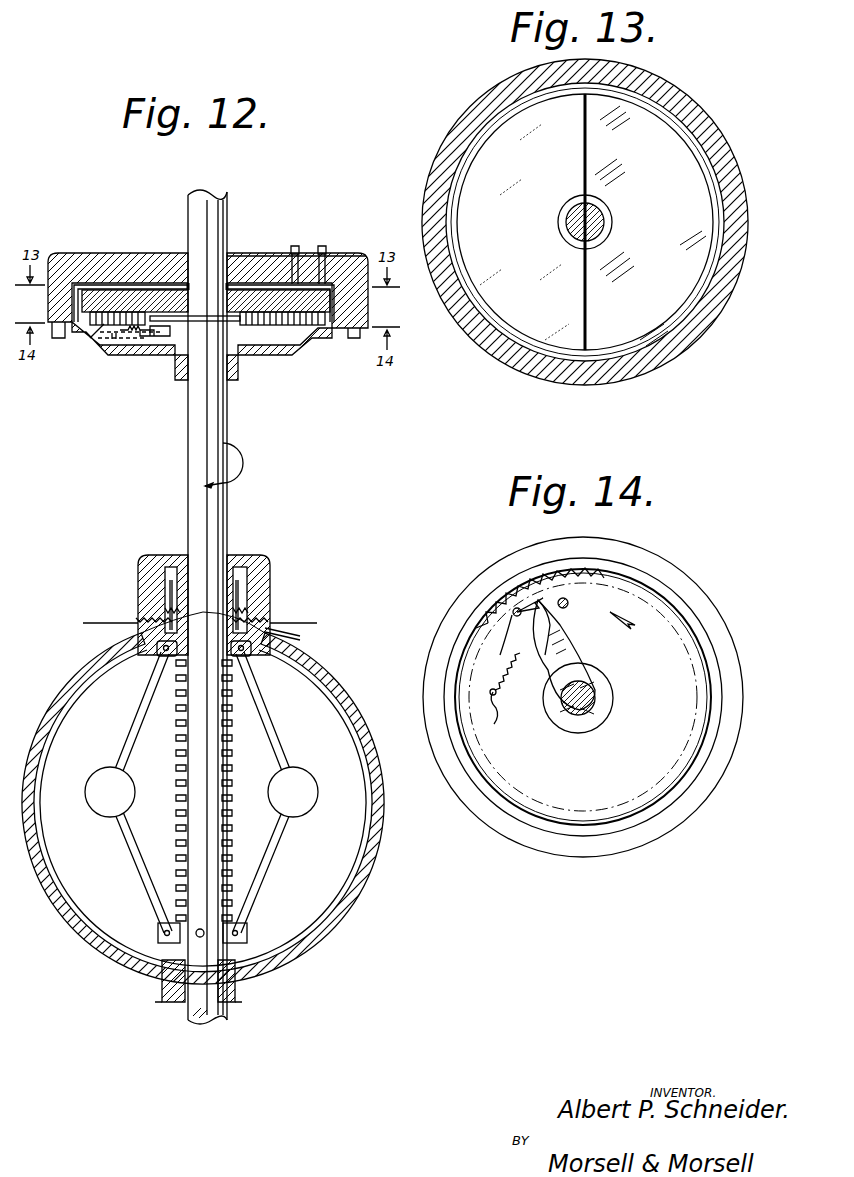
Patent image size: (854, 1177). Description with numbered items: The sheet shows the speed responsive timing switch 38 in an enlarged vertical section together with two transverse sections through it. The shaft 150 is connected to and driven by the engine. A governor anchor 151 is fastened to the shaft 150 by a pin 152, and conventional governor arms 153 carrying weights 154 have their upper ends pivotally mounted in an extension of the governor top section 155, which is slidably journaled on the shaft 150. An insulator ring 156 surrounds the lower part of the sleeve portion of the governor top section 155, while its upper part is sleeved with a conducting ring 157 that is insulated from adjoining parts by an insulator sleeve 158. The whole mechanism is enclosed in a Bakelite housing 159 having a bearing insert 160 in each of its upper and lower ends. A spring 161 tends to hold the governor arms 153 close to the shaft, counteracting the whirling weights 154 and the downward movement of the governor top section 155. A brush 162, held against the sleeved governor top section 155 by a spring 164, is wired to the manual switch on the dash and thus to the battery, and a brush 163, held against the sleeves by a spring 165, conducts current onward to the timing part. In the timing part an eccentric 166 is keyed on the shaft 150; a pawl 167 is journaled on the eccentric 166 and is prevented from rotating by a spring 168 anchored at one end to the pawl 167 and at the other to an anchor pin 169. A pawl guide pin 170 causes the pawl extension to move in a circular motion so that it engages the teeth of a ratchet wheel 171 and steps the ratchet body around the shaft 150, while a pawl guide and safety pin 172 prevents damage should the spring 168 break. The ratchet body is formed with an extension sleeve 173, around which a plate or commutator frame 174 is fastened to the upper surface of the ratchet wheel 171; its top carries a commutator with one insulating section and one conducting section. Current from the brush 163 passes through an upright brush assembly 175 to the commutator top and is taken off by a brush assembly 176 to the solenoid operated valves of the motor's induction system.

In FIG. 12, the speed responsive timing switch 38 is at (273, 356).
In FIG. 12, the shaft 150 is at (206, 222).
In FIG. 13, the shaft 150 is at (600, 228).
In FIG. 14, the shaft 150 is at (596, 700).
In FIG. 12, the governor anchor 151 is at (152, 935).
In FIG. 12, the pin 152 is at (196, 937).
In FIG. 12, the governor arms 153 is at (270, 728).
In FIG. 12, the weights 154 is at (100, 800).
In FIG. 12, the governor top section 155 is at (170, 656).
In FIG. 12, the insulator ring 156 is at (250, 616).
In FIG. 12, the conducting ring 157 is at (254, 590).
In FIG. 12, the insulator sleeve 158 is at (210, 575).
In FIG. 12, the Bakelite housing 159 is at (72, 700).
In FIG. 12, the bearing insert 160 is at (186, 555).
In FIG. 12, the spring 161 is at (233, 800).
In FIG. 12, the brush 162 is at (163, 613).
In FIG. 12, the brush 163 is at (270, 622).
In FIG. 12, the spring 164 is at (140, 620).
In FIG. 12, the spring 165 is at (272, 632).
In FIG. 14, the eccentric 166 is at (575, 672).
In FIG. 12, the pawl 167 is at (158, 290).
In FIG. 14, the pawl 167 is at (552, 648).
In FIG. 12, the spring 168 is at (135, 345).
In FIG. 14, the spring 168 is at (515, 690).
In FIG. 12, the anchor pin 169 is at (98, 338).
In FIG. 14, the anchor pin 169 is at (494, 724).
In FIG. 14, the pawl guide pin 170 is at (535, 603).
In FIG. 12, the ratchet wheel 171 is at (100, 300).
In FIG. 14, the ratchet wheel 171 is at (538, 590).
In FIG. 14, the pawl guide and safety pin 172 is at (569, 603).
In FIG. 12, the extension sleeve 173 is at (235, 283).
In FIG. 13, the extension sleeve 173 is at (604, 212).
In FIG. 12, the commutator frame 174 is at (278, 290).
In FIG. 13, the commutator frame 174 is at (640, 247).
In FIG. 12, the upright brush assembly 175 is at (346, 268).
In FIG. 12, the brush assembly 176 is at (322, 256).